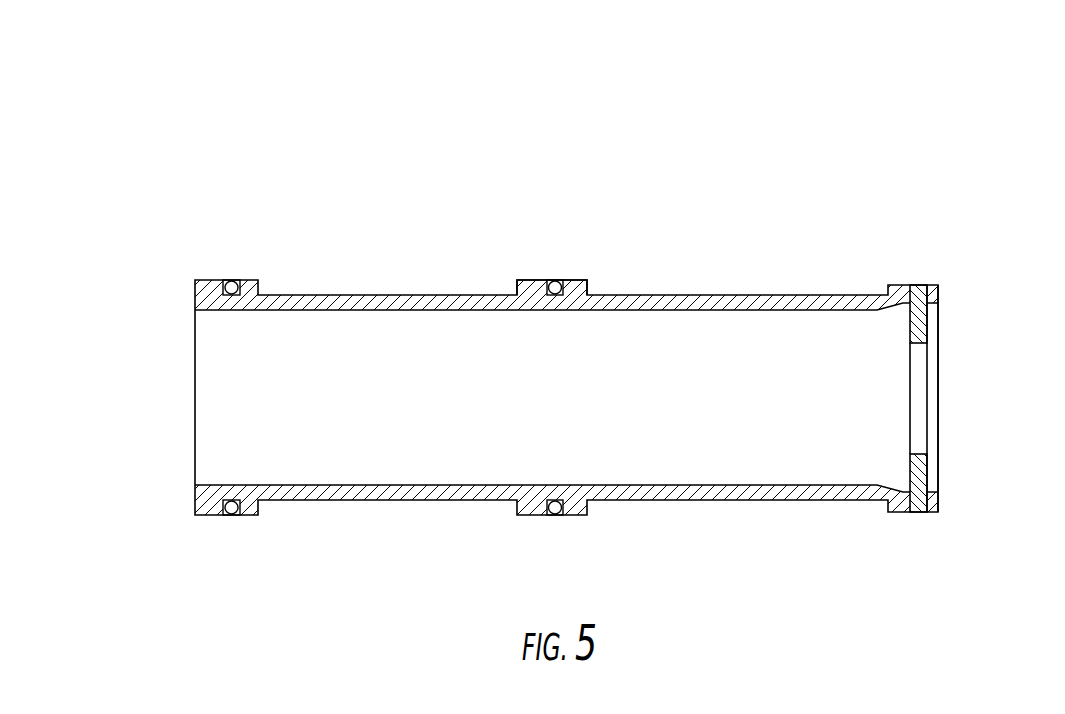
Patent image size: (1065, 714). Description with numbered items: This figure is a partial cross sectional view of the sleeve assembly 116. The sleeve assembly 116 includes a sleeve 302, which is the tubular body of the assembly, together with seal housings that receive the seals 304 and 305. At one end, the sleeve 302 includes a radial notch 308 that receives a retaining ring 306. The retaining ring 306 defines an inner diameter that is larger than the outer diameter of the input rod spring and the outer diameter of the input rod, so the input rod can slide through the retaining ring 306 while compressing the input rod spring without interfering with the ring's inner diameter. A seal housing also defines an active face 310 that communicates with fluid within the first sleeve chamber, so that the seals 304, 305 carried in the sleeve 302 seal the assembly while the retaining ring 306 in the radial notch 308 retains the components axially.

The sleeve assembly 116 is at (147, 96).
The sleeve 302 is at (800, 295).
The seal 304 is at (238, 497).
The seal 305 is at (563, 500).
The retaining ring 306 is at (915, 320).
The radial notch 308 is at (927, 302).
The active face 310 is at (590, 292).